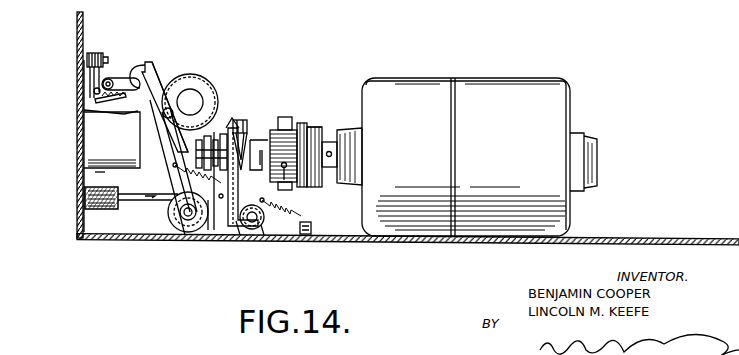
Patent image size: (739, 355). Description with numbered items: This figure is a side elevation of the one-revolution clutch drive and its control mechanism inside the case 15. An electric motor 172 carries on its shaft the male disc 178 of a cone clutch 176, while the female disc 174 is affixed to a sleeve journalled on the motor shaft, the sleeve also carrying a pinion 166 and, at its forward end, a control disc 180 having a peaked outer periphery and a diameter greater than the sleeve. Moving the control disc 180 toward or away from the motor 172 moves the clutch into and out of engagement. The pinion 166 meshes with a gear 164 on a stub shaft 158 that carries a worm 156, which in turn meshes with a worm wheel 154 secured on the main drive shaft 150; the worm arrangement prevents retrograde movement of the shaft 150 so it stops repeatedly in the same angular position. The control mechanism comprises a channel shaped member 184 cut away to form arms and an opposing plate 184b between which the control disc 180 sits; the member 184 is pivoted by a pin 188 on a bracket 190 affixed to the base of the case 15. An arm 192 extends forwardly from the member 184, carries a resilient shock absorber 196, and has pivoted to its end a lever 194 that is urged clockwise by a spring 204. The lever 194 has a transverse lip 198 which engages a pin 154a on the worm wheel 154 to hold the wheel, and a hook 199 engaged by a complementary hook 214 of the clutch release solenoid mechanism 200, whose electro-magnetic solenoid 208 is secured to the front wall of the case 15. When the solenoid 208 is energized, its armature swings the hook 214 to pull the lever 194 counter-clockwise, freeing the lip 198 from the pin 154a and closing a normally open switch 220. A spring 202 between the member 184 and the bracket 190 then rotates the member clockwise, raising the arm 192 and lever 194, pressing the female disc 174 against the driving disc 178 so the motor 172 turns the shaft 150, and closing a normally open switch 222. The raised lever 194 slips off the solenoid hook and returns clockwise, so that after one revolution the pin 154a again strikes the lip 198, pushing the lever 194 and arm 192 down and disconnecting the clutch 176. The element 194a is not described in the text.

The case 15 is at (78, 37).
The main drive shaft 150 is at (196, 101).
The worm wheel 154 is at (208, 82).
The pin 154a is at (168, 108).
The worm 156 is at (204, 146).
The stub shaft 158 is at (238, 126).
The gear 164 is at (318, 117).
The pinion 166 is at (287, 167).
The electric motor 172 is at (430, 82).
The female disc 174 is at (306, 123).
The cone clutch 176 is at (325, 127).
The male disc 178 is at (317, 176).
The control disc 180 is at (286, 116).
The channel shaped member 184 is at (234, 228).
The opposing plate 184b is at (254, 134).
The pin 188 is at (262, 222).
The bracket 190 is at (309, 238).
The arm 192 is at (214, 232).
The lever 194 is at (155, 70).
The arm end 194a is at (256, 146).
The resilient shock absorber 196 is at (178, 228).
The lip 198 is at (173, 167).
The hook 199 is at (146, 62).
The clutch release solenoid mechanism 200 is at (94, 177).
The spring 202 is at (304, 218).
The spring 204 is at (178, 193).
The electro-magnetic solenoid 208 is at (107, 139).
The hook 214 is at (121, 77).
The normally open switch 220 is at (97, 52).
The normally open switch 222 is at (131, 207).